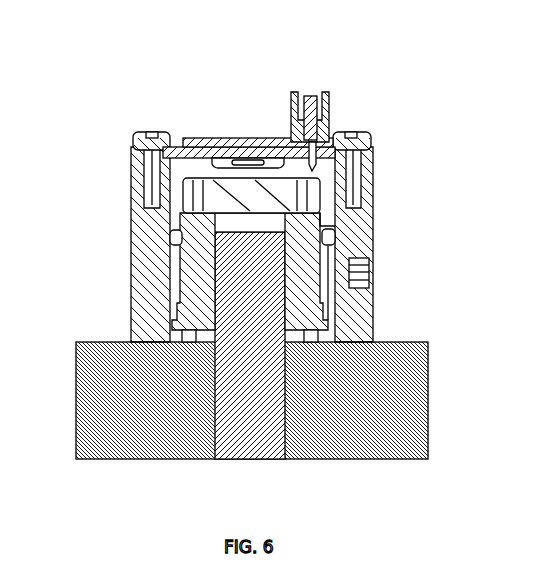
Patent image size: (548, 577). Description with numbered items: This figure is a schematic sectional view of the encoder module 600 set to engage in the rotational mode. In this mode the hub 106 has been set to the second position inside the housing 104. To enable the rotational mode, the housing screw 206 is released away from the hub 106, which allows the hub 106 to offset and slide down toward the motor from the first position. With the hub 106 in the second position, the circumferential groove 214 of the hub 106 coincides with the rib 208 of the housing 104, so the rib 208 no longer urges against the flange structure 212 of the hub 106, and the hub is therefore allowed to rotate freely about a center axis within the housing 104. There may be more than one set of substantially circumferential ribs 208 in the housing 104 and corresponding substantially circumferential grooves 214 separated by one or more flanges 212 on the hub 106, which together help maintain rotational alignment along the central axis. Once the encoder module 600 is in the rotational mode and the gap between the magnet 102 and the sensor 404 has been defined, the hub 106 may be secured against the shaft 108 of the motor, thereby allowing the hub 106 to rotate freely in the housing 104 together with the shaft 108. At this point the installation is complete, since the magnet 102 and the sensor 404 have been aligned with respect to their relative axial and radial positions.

The encoder module 600 is at (441, 41).
The sensor 404 is at (247, 166).
The magnet 102 is at (267, 204).
The circumferential groove 214 is at (326, 222).
The rib 208 is at (328, 238).
The flange structure 212 is at (328, 275).
The housing screw 206 is at (346, 285).
The housing 104 is at (150, 273).
The hub 106 is at (200, 282).
The shaft 108 is at (262, 432).